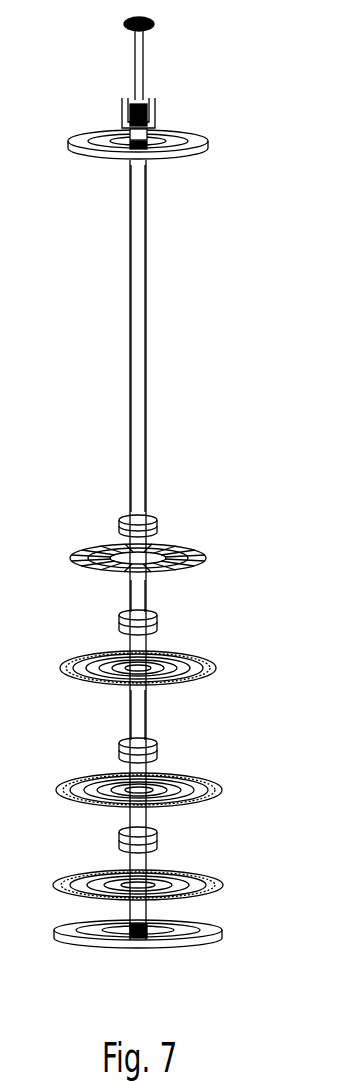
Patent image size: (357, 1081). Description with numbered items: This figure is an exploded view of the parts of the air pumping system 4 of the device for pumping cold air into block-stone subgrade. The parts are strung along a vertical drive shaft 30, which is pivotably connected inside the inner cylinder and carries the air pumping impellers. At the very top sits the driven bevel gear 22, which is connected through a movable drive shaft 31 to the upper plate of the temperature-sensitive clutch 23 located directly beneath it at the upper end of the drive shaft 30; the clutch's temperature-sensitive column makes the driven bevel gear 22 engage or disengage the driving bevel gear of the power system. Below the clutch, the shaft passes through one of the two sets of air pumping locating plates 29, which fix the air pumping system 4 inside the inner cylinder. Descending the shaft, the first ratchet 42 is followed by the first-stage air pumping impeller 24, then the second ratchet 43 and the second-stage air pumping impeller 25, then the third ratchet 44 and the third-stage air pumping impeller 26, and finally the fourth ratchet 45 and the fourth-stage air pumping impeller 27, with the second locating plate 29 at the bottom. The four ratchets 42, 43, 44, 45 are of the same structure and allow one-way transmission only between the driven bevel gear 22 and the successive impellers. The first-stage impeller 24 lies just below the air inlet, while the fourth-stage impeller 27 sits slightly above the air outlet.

The air pumping system 4 is at (97, 550).
The driven bevel gear 22 is at (176, 34).
The temperature-sensitive clutch 23 is at (172, 91).
The first-stage air pumping impeller 24 is at (119, 521).
The second-stage air pumping impeller 25 is at (170, 682).
The third-stage air pumping impeller 26 is at (169, 812).
The fourth-stage air pumping impeller 27 is at (178, 899).
The air pumping locating plate 29 is at (167, 557).
The drive shaft 30 is at (133, 452).
The movable drive shaft 31 is at (102, 69).
The No. 1 ratchet 42 is at (180, 521).
The No. 2 ratchet 43 is at (186, 598).
The No. 3 ratchet 44 is at (180, 731).
The No. 4 ratchet 45 is at (99, 832).